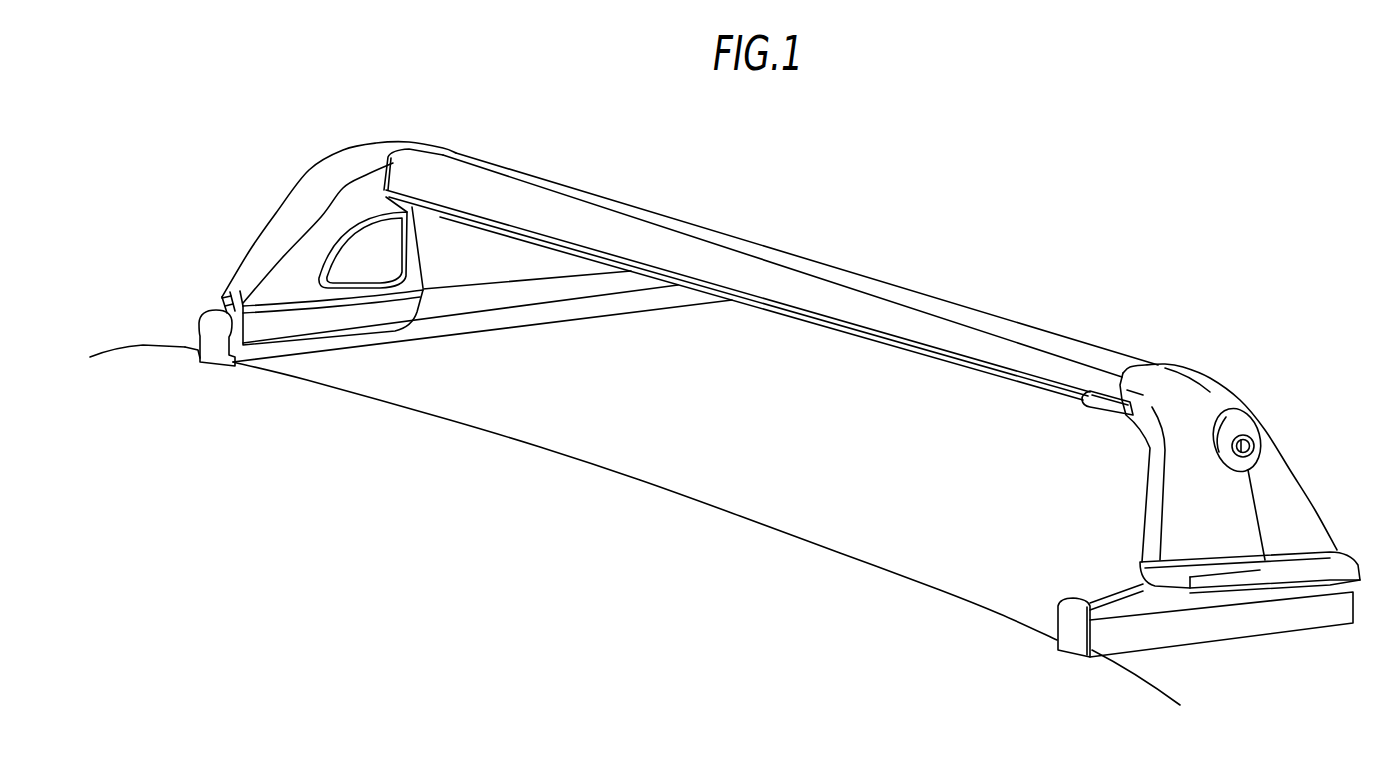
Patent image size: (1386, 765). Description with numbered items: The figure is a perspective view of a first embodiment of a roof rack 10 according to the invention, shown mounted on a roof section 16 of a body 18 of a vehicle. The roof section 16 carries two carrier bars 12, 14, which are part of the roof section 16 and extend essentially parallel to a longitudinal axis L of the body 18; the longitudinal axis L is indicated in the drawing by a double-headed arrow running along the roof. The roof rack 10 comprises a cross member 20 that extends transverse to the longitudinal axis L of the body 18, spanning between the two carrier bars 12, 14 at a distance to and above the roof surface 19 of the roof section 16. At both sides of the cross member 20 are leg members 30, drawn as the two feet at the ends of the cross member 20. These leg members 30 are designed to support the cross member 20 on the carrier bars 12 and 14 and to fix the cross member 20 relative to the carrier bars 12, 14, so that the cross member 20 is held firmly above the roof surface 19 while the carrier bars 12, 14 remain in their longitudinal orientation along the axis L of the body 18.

The roof rack 10 is at (893, 184).
The carrier bar 12 is at (1173, 628).
The carrier bar 14 is at (473, 300).
The roof section 16 is at (622, 443).
The body 18 is at (444, 423).
The roof surface 19 is at (887, 537).
The cross member 20 is at (962, 320).
The leg member 30 is at (290, 234).
The longitudinal axis L is at (863, 428).